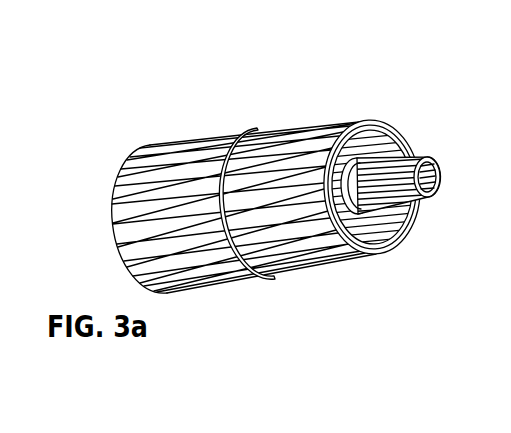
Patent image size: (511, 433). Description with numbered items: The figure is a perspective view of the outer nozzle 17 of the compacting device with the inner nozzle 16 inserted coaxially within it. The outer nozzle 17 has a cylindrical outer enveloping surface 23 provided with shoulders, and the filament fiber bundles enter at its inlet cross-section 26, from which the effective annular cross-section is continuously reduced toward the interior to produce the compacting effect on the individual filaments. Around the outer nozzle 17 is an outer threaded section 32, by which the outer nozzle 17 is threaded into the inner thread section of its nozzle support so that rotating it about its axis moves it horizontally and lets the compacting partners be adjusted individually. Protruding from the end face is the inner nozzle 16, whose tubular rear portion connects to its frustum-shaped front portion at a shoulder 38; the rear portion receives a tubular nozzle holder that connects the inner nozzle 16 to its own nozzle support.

The inner nozzle 16 is at (437, 140).
The outer nozzle 17 is at (259, 108).
The cylindrical outer enveloping surface 23 is at (181, 140).
The inlet cross-section 26 is at (370, 142).
The outer threaded section 32 is at (355, 123).
The shoulder 38 is at (370, 210).